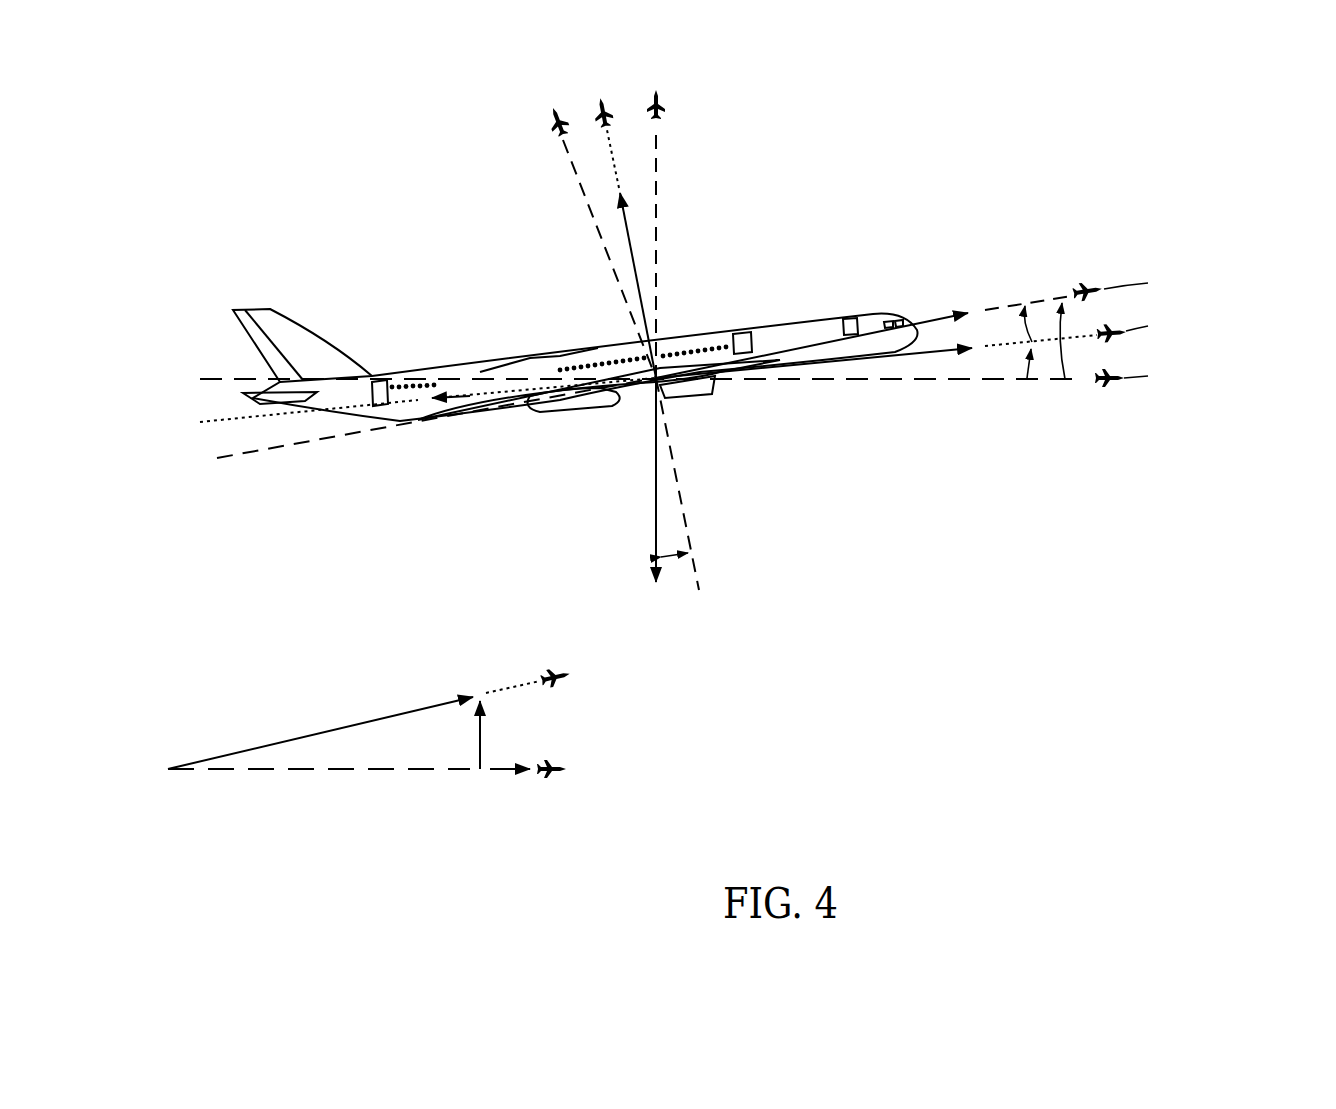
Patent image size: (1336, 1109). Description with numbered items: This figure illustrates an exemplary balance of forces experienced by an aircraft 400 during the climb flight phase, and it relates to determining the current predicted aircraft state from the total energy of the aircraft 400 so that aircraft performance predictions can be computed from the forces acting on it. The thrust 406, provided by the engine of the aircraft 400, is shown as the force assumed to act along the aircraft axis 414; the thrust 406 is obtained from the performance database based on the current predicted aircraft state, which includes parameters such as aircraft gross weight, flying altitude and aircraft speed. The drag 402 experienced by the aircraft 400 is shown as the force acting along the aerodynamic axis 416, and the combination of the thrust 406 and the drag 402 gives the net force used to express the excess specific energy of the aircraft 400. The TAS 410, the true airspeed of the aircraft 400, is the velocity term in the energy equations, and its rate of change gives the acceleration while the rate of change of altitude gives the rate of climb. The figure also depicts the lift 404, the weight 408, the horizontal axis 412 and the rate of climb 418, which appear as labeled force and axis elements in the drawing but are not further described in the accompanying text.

The aircraft 400 is at (1013, 640).
The drag 402 is at (455, 386).
The lift 404 is at (608, 130).
The thrust 406 is at (950, 340).
The weight 408 is at (656, 518).
The TAS 410 is at (951, 370).
The horizontal axis 412 is at (750, 392).
The aircraft axis 414 is at (741, 358).
The aerodynamic axis 416 is at (759, 367).
The rate of climb (RC) 418 is at (535, 720).